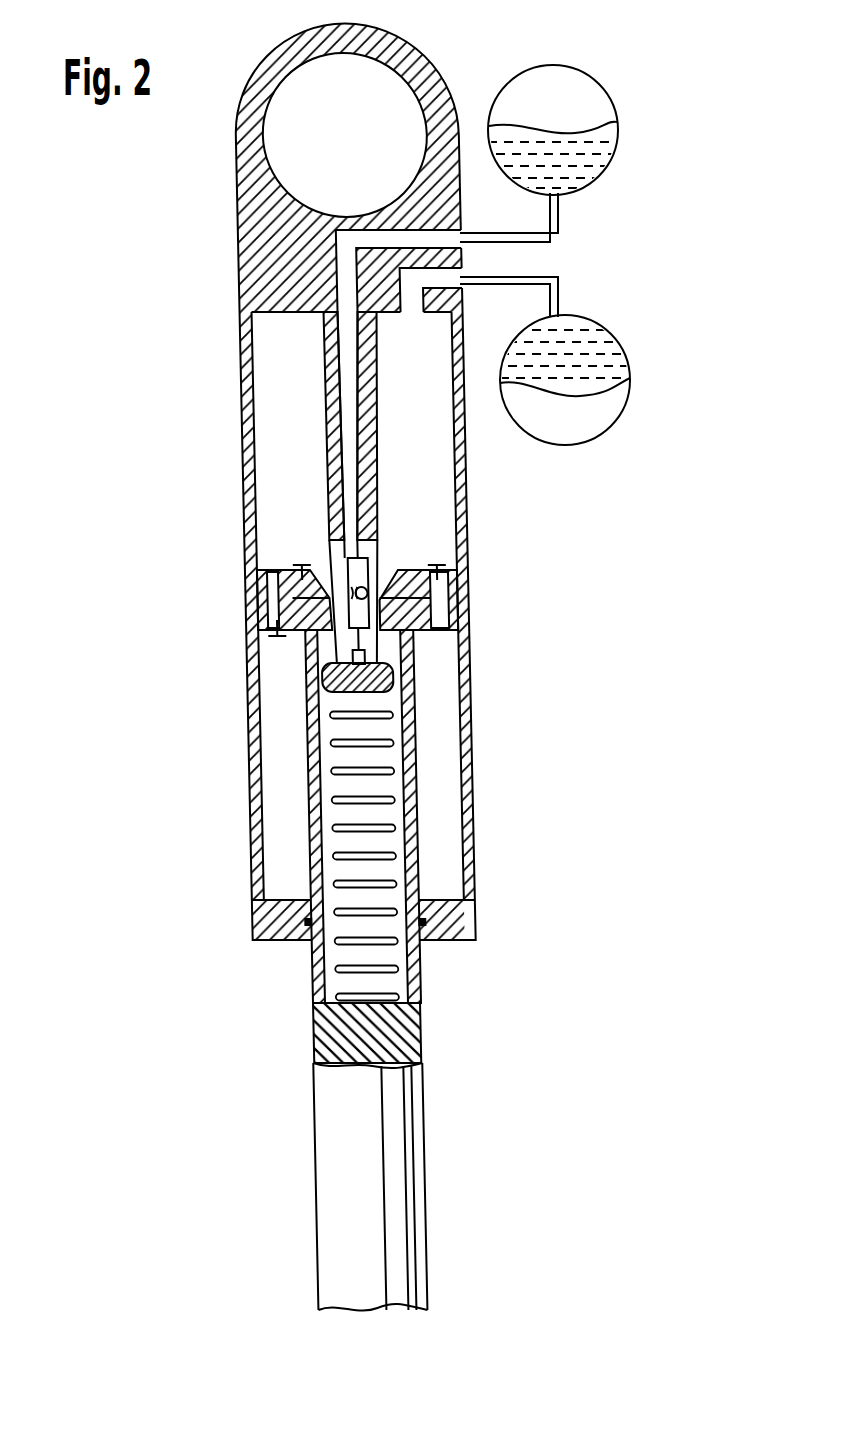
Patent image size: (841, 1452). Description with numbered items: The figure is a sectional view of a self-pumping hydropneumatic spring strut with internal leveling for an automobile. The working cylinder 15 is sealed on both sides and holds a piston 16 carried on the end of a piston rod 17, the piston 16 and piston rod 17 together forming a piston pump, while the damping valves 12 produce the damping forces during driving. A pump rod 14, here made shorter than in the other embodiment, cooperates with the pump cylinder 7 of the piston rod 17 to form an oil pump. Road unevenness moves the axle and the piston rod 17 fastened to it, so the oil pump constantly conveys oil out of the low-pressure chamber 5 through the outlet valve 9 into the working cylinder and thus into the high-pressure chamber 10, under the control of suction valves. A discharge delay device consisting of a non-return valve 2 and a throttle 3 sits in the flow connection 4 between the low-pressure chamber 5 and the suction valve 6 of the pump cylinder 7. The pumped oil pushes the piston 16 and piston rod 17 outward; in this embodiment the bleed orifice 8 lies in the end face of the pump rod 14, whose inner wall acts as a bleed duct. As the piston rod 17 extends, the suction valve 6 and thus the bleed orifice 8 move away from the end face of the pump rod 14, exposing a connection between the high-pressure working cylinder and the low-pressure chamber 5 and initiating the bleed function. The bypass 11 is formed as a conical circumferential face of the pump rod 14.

The non-return valve 2 is at (440, 624).
The throttle 3 is at (262, 606).
The flow connection 4 is at (352, 442).
The low-pressure chamber 5 is at (597, 153).
The suction valve 6 is at (390, 693).
The pump cylinder 7 is at (353, 980).
The bleed orifice 8 is at (393, 665).
The outlet valve 9 is at (303, 566).
The high-pressure chamber 10 is at (438, 495).
The bypass 11 is at (387, 567).
The damping valves 12 is at (430, 565).
The pump rod 14 is at (378, 457).
The working cylinder 15 is at (471, 873).
The piston 16 is at (368, 594).
The piston rod 17 is at (403, 1142).